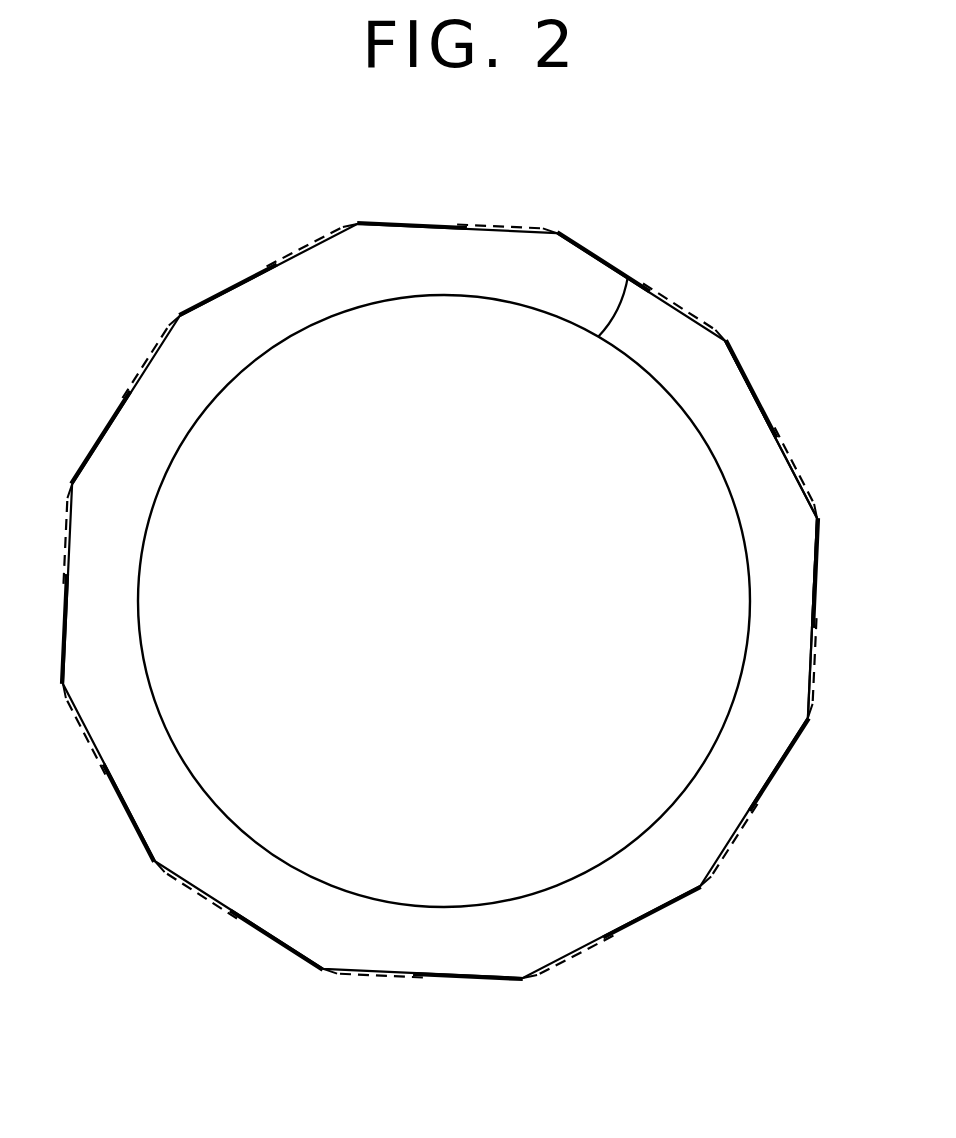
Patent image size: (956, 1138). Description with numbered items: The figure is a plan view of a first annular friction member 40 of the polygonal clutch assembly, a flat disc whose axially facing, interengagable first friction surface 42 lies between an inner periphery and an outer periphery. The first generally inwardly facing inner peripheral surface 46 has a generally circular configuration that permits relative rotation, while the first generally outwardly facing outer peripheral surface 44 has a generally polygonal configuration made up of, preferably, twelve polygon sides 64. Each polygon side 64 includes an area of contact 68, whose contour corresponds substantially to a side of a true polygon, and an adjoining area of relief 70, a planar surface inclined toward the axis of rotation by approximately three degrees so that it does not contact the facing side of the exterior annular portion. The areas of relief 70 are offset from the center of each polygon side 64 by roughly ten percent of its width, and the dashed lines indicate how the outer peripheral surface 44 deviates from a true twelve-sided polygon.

The first annular friction member 40 is at (231, 214).
The first friction surface 42 is at (781, 493).
The first generally outwardly facing outer peripheral surface 44 is at (746, 380).
The first generally inwardly facing inner peripheral surface 46 is at (628, 276).
The polygon side 64 is at (816, 547).
The area of contact 68 is at (425, 227).
The area of relief 70 is at (545, 229).